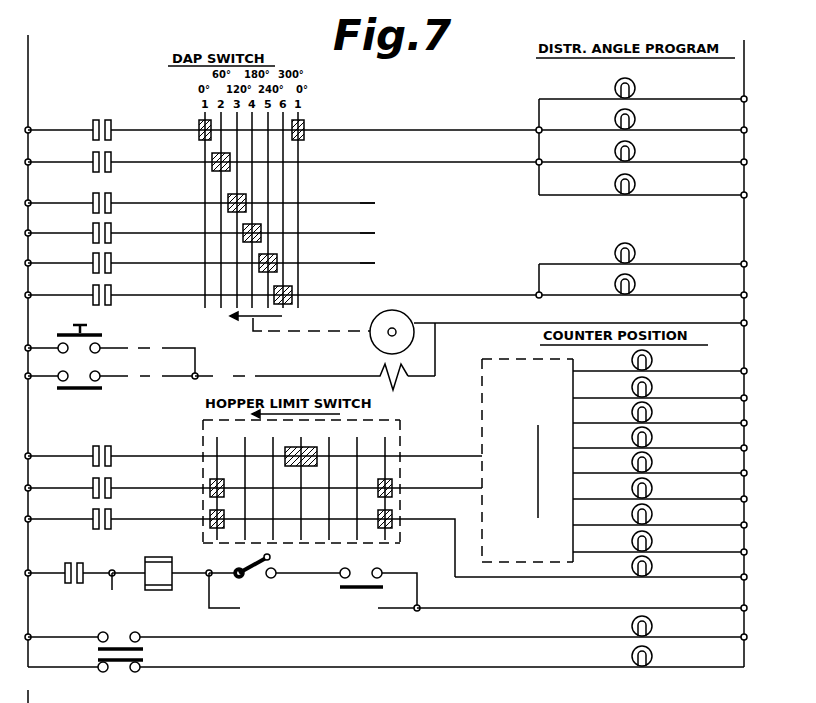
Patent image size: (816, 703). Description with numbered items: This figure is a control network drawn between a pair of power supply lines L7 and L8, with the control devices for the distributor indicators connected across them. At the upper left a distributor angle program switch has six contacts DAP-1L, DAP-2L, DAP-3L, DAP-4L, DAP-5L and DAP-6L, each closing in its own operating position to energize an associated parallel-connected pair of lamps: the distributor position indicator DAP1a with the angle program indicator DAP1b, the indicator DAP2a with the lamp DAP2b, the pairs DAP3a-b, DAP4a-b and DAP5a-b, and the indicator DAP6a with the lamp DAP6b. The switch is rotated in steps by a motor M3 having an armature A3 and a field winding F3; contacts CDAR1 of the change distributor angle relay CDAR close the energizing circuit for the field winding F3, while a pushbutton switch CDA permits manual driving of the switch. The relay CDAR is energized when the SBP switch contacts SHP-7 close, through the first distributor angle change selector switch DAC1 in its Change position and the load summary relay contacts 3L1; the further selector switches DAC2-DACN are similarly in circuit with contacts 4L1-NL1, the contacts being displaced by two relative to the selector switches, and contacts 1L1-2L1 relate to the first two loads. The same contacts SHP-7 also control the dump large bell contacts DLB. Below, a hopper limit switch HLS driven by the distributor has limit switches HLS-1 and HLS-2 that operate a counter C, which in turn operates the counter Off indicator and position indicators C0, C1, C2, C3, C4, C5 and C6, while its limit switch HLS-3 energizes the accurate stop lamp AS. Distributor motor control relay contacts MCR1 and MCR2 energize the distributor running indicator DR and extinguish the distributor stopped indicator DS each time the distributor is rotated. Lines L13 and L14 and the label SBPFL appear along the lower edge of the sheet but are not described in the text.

The power supply line L7 is at (28, 43).
The power supply line L8 is at (744, 48).
The distributor angle program switch contact DAP-1L is at (384, 124).
The distributor angle program switch contact DAP-2L is at (384, 156).
The distributor angle program switch contact DAP-3L is at (200, 197).
The distributor angle program switch contact DAP-4L is at (200, 227).
The distributor angle program switch contact DAP-5L is at (200, 257).
The distributor angle program switch contact DAP-6L is at (384, 289).
The parallel-connected pair of lamps DAP3a-b is at (401, 208).
The parallel-connected pair of lamps DAP4a-b is at (401, 238).
The parallel-connected pair of lamps DAP5a-b is at (401, 268).
The distributor position indicator DAP1a is at (614, 86).
The distributor angle program indicator DAP1b is at (614, 117).
The distributor position indicator DAP2a is at (614, 149).
The distributor angle program indicator DAP2b is at (614, 182).
The distributor position indicator DAP6a is at (614, 251).
The distributor angle program indicator DAP6b is at (614, 282).
The pushbutton switch CDA is at (54, 341).
The change distributor angle relay contacts CDAR1 is at (78, 375).
The armature A3 is at (370, 322).
The motor M3 is at (400, 356).
The field winding F3 is at (380, 372).
The hopper limit switch HLS is at (400, 440).
The limit switch HLS-1 is at (107, 445).
The limit switch HLS-2 is at (107, 477).
The limit switch HLS-3 is at (107, 508).
The counter C is at (482, 381).
The hopper limit switch counter indicator C0 is at (633, 395).
The hopper limit switch counter indicator C1 is at (633, 420).
The hopper limit switch counter indicator C2 is at (633, 445).
The hopper limit switch counter indicator C3 is at (633, 470).
The hopper limit switch counter indicator C4 is at (633, 496).
The hopper limit switch counter indicator C5 is at (633, 522).
The hopper limit switch counter indicator C6 is at (633, 549).
The accurate stop lamp AS is at (653, 566).
The SBP switch contacts SHP-7 is at (78, 562).
The dump large bell contacts DLB is at (121, 592).
The change distributor angle relay CDAR is at (146, 558).
The distributor angle change selector switch DAC1 is at (244, 563).
The load summary relay contacts 3L1 is at (378, 568).
The distributor angle change selector switches DAC2-DACN is at (246, 600).
The load summary relay contacts 4L1-NL1 is at (367, 606).
The load summary relay contacts 1L1-2L1 is at (532, 616).
The distributor motor control relay contacts MCR1 is at (125, 633).
The distributor motor control relay contacts MCR2 is at (125, 672).
The distributor running indicator DR is at (653, 626).
The distributor stopped indicator DS is at (653, 656).
The line L13 is at (28, 697).
The element SBPFL is at (335, 700).
The line L14 is at (445, 698).